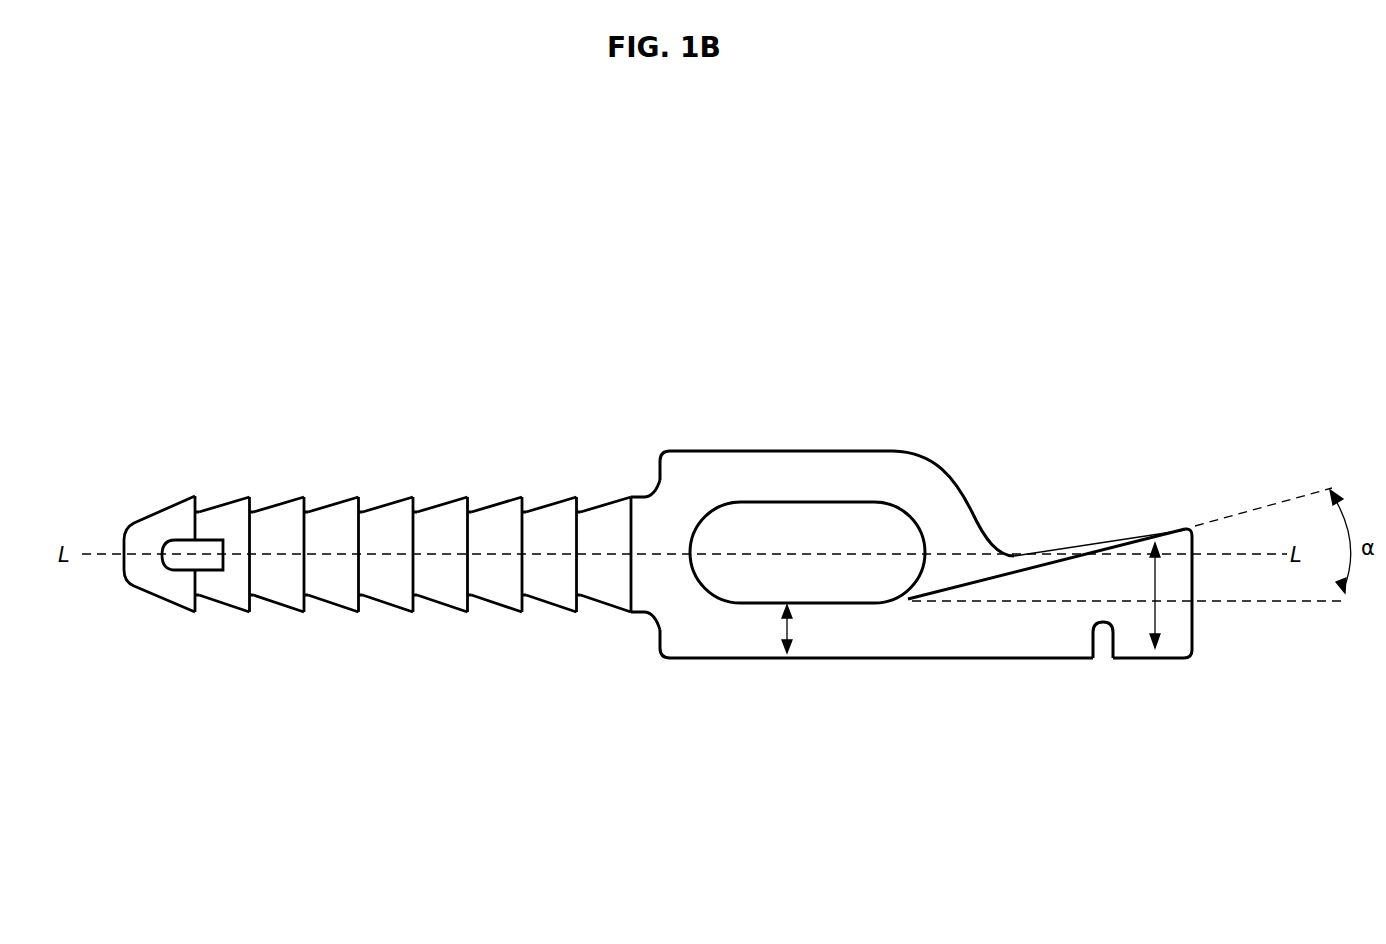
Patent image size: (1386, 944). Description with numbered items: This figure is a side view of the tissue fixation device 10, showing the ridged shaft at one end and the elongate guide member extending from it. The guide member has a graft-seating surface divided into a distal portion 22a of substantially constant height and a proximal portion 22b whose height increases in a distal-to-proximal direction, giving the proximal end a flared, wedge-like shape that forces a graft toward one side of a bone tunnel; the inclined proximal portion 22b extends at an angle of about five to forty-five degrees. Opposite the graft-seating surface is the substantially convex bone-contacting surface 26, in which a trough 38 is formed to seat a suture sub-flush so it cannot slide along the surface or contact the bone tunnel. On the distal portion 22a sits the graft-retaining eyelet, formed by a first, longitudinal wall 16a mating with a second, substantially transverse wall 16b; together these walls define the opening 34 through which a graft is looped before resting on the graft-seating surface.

The tissue fixation device 10 is at (213, 262).
The first, longitudinal wall 16a is at (821, 490).
The second, substantially transverse wall 16b is at (969, 546).
The opening 34 is at (809, 548).
The bone-contacting surface 26 is at (1009, 640).
The distal portion of the graft-seating surface 22a is at (908, 677).
The proximal portion of the graft-seating surface 22b is at (1170, 677).
The trough 38 is at (1102, 636).